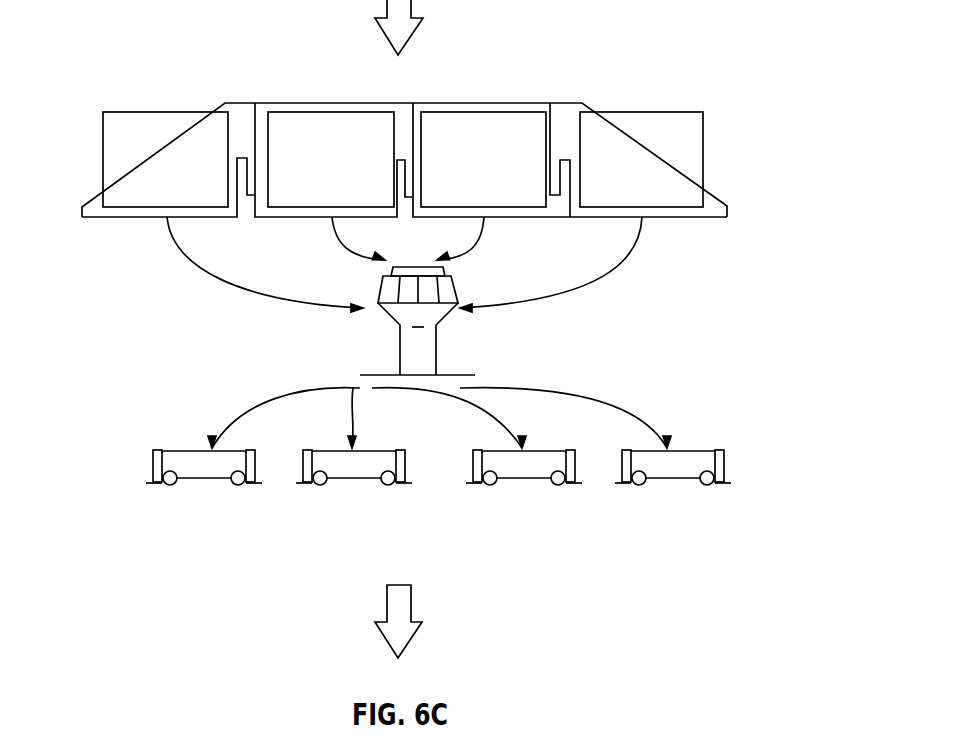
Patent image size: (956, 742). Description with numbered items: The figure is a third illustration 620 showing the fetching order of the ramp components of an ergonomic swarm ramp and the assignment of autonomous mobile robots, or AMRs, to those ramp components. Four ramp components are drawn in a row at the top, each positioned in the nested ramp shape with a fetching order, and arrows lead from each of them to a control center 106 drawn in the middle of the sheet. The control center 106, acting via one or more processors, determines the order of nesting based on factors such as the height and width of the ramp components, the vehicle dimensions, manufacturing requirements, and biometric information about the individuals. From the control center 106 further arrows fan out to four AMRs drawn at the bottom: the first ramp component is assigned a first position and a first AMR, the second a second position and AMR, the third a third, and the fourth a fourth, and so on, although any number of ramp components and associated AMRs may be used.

The third illustration 620 is at (713, 55).
The control center 106 is at (396, 310).